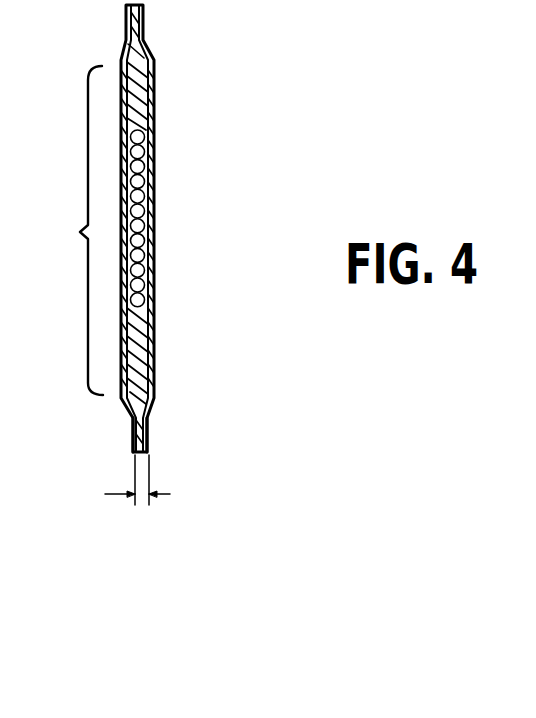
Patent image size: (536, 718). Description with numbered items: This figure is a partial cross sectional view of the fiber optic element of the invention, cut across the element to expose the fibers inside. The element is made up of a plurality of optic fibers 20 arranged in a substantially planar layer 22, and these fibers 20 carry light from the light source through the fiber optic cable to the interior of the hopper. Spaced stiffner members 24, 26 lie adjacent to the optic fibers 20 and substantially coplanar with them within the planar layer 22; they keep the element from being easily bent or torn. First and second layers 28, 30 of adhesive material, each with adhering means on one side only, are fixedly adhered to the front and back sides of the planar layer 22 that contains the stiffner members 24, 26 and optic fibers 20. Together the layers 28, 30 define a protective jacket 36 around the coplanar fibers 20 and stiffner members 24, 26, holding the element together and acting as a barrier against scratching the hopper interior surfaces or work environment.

The optic fibers 20 is at (147, 208).
The planar layer 22 is at (97, 228).
The stiffner member 24 is at (137, 105).
The stiffner member 26 is at (150, 358).
The first layer 28 is at (153, 405).
The second layer 30 is at (132, 412).
The protective jacket 36 is at (143, 497).